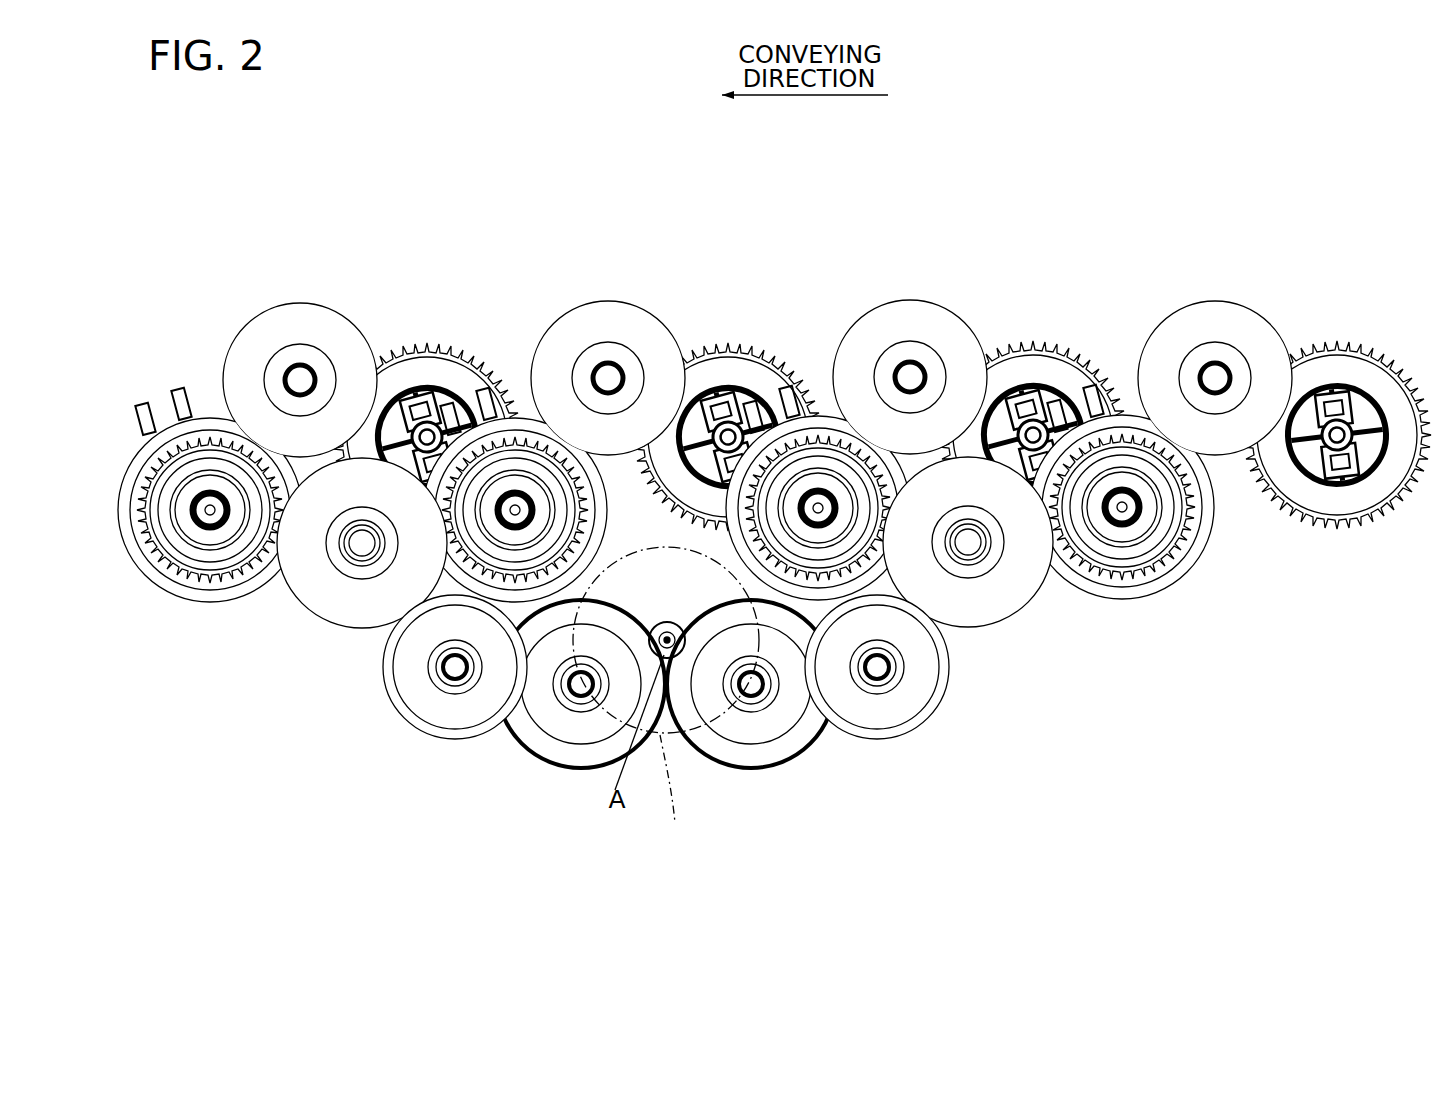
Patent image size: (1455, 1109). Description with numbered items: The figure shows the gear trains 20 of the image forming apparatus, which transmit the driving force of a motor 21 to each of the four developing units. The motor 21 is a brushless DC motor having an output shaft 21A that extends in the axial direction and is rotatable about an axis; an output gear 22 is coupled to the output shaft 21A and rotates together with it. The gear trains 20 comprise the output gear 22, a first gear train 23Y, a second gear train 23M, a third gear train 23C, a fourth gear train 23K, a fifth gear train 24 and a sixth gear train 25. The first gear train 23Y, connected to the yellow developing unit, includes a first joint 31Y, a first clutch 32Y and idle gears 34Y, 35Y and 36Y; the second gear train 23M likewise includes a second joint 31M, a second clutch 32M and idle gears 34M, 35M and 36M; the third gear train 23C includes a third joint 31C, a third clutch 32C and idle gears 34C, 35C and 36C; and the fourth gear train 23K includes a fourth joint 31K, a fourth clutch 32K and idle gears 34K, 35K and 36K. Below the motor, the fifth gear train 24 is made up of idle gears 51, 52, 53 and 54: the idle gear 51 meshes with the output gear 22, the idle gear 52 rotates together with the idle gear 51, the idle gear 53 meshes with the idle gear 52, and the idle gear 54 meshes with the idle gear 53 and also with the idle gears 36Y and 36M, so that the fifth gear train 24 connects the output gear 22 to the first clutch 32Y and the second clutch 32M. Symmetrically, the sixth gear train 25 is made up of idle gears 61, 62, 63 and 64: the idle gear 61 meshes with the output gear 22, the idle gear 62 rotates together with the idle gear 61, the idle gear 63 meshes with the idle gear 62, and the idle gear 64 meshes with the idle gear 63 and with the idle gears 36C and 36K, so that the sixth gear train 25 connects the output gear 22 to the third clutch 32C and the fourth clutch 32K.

The gear trains 20 is at (1186, 630).
The motor 21 is at (672, 794).
The output shaft 21A is at (661, 627).
The output gear 22 is at (677, 626).
The fourth gear train 23K is at (393, 186).
The third gear train 23C is at (736, 186).
The second gear train 23M is at (752, 186).
The first gear train 23Y is at (1115, 186).
The fifth gear train 24 is at (1055, 878).
The sixth gear train 25 is at (265, 878).
The fourth joint 31K is at (420, 333).
The third joint 31C is at (713, 333).
The second joint 31M is at (1033, 333).
The first joint 31Y is at (1373, 342).
The fourth clutch 32K is at (148, 453).
The third clutch 32C is at (485, 433).
The second clutch 32M is at (793, 430).
The first clutch 32Y is at (1095, 428).
The idle gear 34K is at (320, 308).
The idle gear 34C is at (608, 302).
The idle gear 34M is at (938, 302).
The idle gear 34Y is at (1272, 325).
The idle gear 35K is at (198, 393).
The idle gear 35C is at (512, 393).
The idle gear 35M is at (830, 392).
The idle gear 35Y is at (1167, 391).
The idle gear 36K is at (188, 463).
The idle gear 36C is at (513, 460).
The idle gear 36M is at (832, 458).
The idle gear 36Y is at (1132, 460).
The idle gear 51 is at (746, 768).
The idle gear 52 is at (790, 722).
The idle gear 53 is at (890, 735).
The idle gear 54 is at (1004, 622).
The idle gear 61 is at (570, 768).
The idle gear 62 is at (540, 722).
The idle gear 63 is at (420, 735).
The idle gear 64 is at (320, 620).